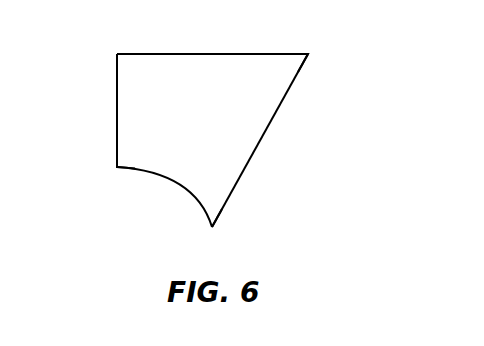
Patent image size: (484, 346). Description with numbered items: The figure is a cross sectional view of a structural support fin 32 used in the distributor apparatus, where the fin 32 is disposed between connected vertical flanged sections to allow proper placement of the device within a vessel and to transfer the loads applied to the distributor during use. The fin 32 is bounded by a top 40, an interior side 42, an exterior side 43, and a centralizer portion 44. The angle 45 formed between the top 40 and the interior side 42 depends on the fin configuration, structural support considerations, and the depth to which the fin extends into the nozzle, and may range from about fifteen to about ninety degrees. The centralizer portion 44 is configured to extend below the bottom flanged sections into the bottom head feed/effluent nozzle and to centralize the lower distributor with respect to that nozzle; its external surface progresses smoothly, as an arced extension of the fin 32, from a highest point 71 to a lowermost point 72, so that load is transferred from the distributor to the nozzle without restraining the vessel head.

The structural support fin 32 is at (204, 137).
The top 40 is at (213, 54).
The interior side 42 is at (260, 142).
The exterior side 43 is at (117, 112).
The centralizer portion 44 is at (178, 185).
The angle 45 is at (280, 54).
The highest point 71 is at (117, 165).
The lowermost point 72 is at (220, 211).